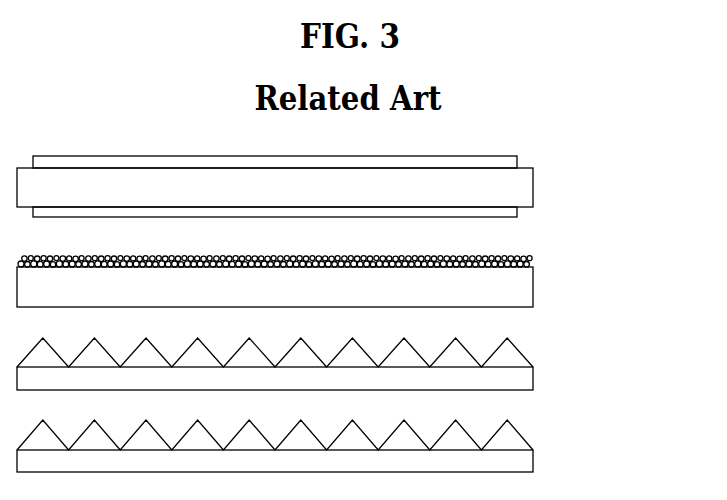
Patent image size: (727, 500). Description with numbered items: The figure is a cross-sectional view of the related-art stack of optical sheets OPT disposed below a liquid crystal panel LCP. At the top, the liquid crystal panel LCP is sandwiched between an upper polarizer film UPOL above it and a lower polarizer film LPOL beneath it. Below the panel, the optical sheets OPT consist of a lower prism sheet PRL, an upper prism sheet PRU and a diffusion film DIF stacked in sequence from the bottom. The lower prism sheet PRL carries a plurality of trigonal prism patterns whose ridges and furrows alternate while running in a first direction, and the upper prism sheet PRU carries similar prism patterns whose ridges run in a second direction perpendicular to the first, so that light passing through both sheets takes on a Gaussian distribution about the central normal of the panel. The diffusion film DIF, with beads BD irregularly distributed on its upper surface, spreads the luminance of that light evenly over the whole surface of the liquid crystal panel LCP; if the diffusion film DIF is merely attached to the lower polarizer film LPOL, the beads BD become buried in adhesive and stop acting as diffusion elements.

The upper polarizer film UPOL is at (510, 161).
The liquid crystal panel LCP is at (525, 185).
The lower polarizer film LPOL is at (510, 213).
The beads BD is at (530, 262).
The diffusion film DIF is at (525, 287).
The upper prism sheet PRU is at (549, 382).
The lower prism sheet PRL is at (321, 448).
The optical sheets OPT is at (353, 364).